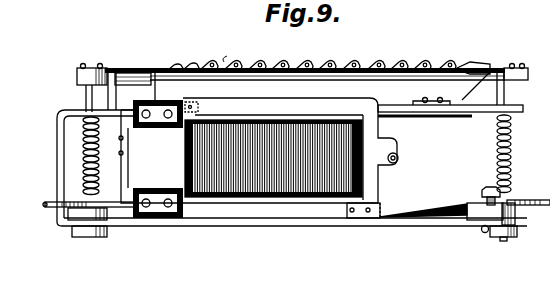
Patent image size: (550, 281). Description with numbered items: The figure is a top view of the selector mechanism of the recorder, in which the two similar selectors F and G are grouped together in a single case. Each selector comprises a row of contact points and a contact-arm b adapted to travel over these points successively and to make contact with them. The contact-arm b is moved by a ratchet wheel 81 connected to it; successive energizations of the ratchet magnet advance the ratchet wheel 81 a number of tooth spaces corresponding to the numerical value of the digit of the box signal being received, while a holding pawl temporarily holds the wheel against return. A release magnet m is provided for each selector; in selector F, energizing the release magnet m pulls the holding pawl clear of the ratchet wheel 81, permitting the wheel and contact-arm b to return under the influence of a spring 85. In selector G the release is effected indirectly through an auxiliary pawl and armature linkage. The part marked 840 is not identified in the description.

The selector G is at (312, 53).
The contact-arm b is at (145, 69).
The selector F is at (229, 61).
The release magnet m is at (285, 172).
The lever 840 is at (423, 198).
The spring 85 is at (512, 154).
The ratchet wheel 81 is at (45, 200).